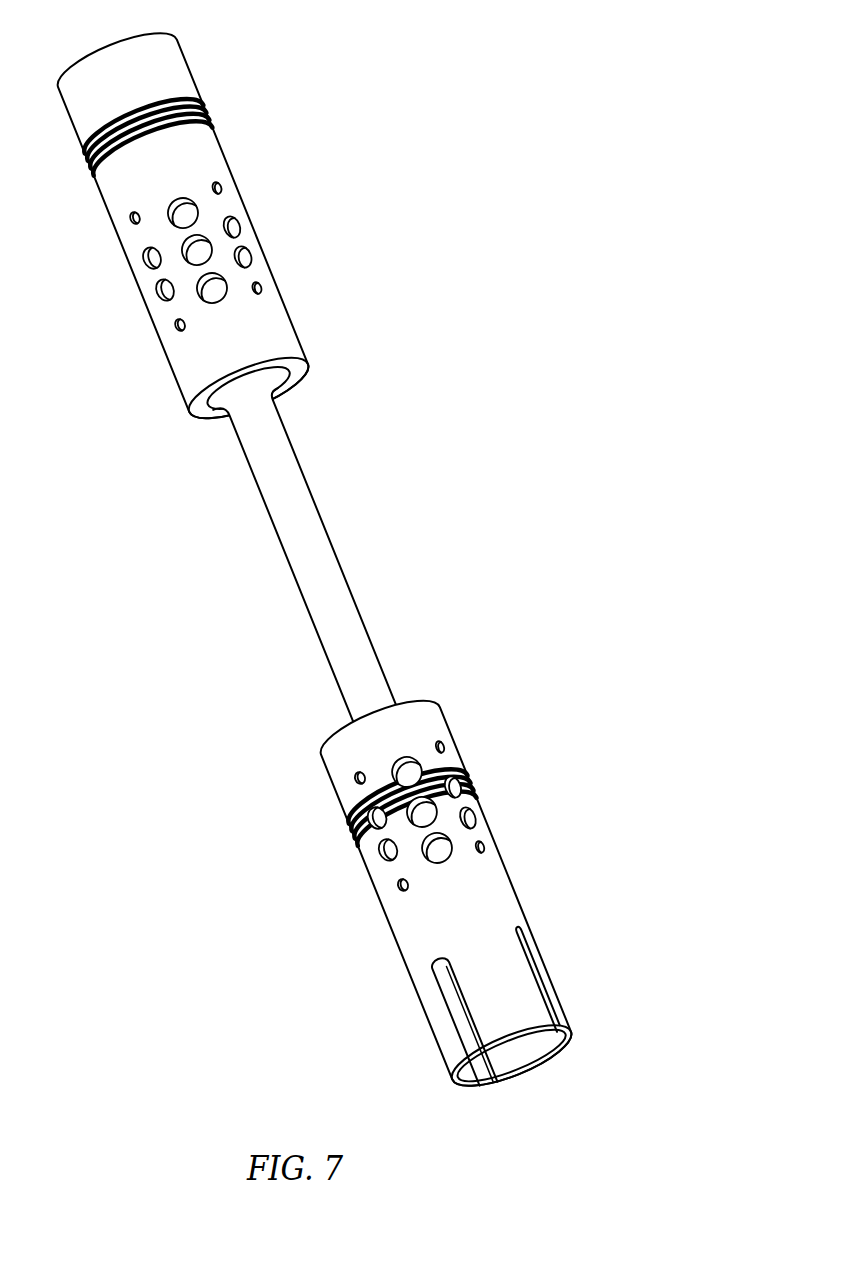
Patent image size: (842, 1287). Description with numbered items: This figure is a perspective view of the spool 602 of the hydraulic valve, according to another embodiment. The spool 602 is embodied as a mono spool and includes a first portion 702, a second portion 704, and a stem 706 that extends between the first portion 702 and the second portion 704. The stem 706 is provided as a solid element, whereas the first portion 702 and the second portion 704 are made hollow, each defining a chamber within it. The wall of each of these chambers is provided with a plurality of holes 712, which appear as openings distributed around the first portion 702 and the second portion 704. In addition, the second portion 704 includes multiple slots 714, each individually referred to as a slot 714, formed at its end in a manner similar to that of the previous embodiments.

The spool 602 is at (333, 559).
The first portion 702 is at (207, 159).
The second portion 704 is at (438, 722).
The stem 706 is at (312, 518).
The holes 712 is at (244, 256).
The slots 714 is at (533, 967).